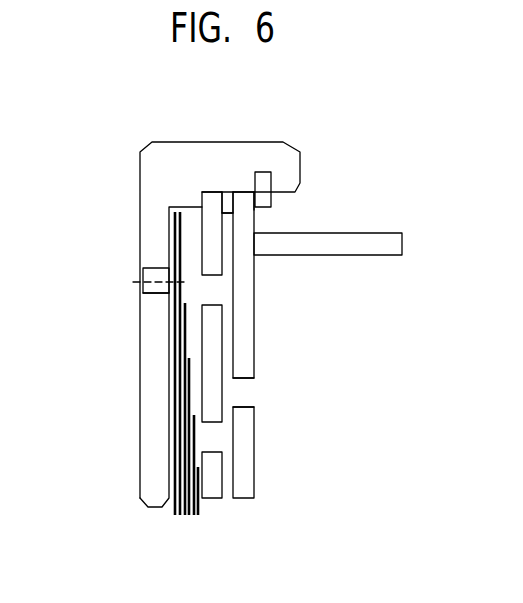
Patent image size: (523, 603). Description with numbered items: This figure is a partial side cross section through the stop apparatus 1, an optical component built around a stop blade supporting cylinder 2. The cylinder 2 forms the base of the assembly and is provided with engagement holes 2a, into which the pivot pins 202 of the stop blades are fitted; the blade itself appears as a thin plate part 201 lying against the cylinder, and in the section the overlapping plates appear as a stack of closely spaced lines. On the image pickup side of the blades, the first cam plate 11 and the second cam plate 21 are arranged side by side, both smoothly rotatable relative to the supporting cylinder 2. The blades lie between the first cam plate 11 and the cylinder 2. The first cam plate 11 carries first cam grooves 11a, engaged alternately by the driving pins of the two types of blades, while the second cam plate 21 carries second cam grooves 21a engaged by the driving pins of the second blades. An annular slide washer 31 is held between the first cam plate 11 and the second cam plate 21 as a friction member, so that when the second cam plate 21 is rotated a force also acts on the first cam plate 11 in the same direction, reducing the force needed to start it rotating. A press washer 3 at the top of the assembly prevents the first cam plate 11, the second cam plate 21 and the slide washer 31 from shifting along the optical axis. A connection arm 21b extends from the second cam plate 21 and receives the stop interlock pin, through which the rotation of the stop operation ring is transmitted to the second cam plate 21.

The stop apparatus 1 is at (113, 129).
The stop blade supporting cylinder 2 is at (160, 175).
The plate part 201 is at (172, 242).
The engagement hole 2a is at (147, 283).
The pivot pin 202 is at (163, 287).
The press washer 3 is at (263, 183).
The slide washer 31 is at (230, 207).
The first cam plate 11 is at (210, 490).
The first cam groove 11a is at (212, 293).
The second cam plate 21 is at (242, 477).
The second cam groove 21a is at (250, 397).
The connection arm 21b is at (330, 240).